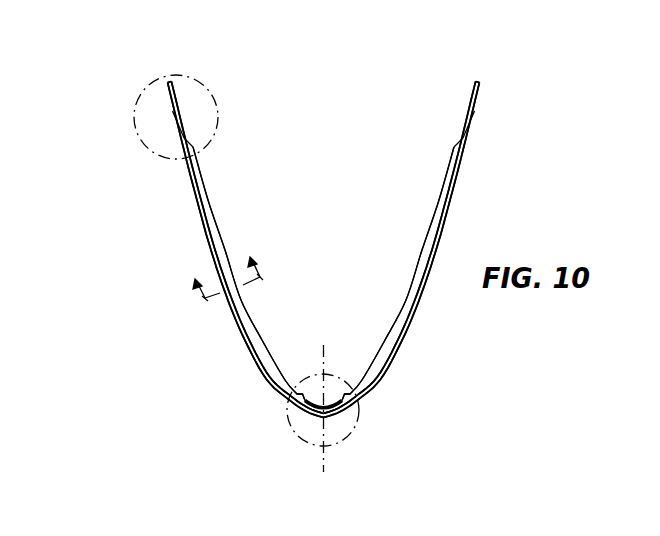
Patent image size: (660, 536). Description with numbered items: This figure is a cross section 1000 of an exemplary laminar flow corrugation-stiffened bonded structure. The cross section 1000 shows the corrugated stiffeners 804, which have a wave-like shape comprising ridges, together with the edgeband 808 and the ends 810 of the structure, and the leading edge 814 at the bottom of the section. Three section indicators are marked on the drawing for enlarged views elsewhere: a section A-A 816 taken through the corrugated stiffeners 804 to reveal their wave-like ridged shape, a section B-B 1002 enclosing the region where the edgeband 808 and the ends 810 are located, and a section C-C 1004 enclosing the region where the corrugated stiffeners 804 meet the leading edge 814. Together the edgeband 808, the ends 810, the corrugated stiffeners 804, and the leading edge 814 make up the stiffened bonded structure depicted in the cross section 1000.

The cross section 1000 is at (517, 124).
The edgeband 808 is at (179, 100).
The ends 810 is at (193, 133).
The corrugated stiffeners 804 is at (420, 245).
The leading edge 814 is at (305, 432).
The section A-A 816 is at (218, 295).
The section B-B 1002 is at (165, 162).
The section C-C 1004 is at (366, 412).